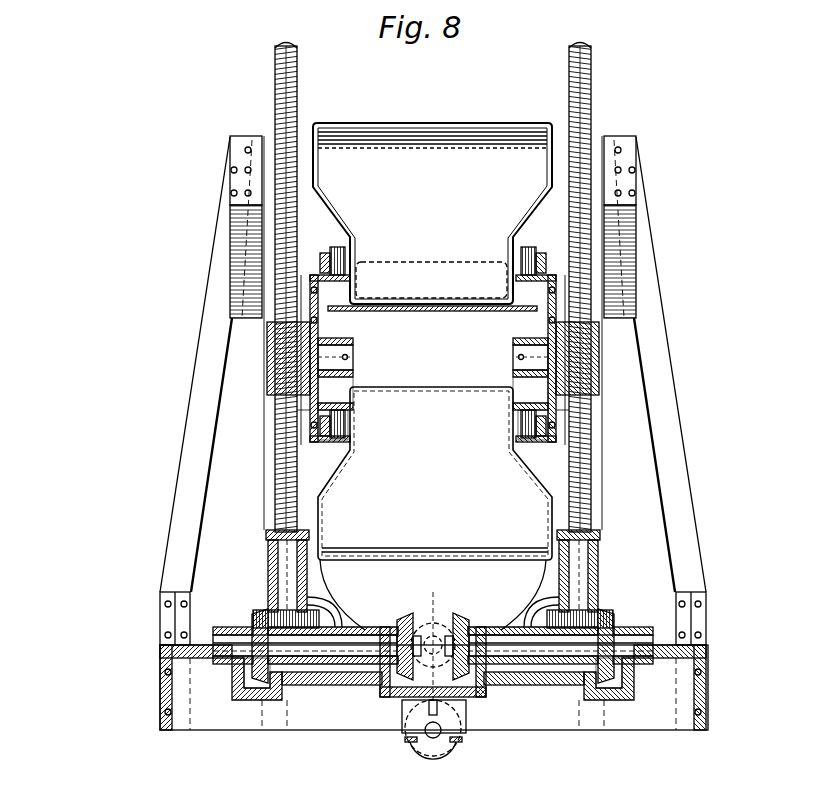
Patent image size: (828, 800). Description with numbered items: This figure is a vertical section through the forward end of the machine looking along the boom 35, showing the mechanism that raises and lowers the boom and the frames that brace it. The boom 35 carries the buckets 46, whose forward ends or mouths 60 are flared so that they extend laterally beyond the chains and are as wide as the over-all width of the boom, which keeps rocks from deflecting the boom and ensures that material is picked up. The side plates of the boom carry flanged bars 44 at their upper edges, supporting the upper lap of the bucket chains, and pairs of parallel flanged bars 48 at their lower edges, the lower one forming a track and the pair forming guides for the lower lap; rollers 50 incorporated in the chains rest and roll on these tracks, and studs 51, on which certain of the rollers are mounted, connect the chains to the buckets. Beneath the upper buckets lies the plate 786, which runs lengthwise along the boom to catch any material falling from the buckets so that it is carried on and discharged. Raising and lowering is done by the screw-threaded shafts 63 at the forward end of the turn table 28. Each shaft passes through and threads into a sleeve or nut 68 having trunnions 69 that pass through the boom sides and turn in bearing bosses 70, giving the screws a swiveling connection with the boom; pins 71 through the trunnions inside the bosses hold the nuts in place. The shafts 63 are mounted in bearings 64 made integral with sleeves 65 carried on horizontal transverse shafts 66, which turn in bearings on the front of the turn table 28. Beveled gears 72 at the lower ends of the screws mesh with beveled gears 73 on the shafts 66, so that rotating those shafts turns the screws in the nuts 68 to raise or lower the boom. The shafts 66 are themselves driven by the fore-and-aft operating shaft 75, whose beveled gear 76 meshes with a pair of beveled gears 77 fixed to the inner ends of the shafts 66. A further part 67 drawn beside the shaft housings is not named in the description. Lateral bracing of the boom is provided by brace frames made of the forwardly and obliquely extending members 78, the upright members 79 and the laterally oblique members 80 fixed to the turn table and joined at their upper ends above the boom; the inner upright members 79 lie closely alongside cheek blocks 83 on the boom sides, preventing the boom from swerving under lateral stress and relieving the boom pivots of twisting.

The turn table 28 is at (461, 661).
The screw-threaded raising and lowering shafts 63 is at (283, 62).
The forwardly and obliquely extending brace members 78 is at (245, 230).
The laterally oblique members 80 is at (182, 447).
The upright members 79 is at (214, 450).
The sleeves or nuts 68 is at (275, 356).
The bearing bosses 70 is at (340, 340).
The trunnions 69 is at (353, 360).
The pins 71 is at (346, 377).
The cheek blocks 83 is at (300, 412).
The rollers 50 is at (338, 250).
The studs 51 is at (325, 252).
The forward ends or mouths of the buckets 60 is at (440, 123).
The flanged bars 44 is at (348, 292).
The plate 786 is at (430, 306).
The buckets 46 is at (435, 406).
The flanged bars 48 is at (350, 418).
The bearings 64 is at (268, 560).
The beveled gears 72 is at (258, 616).
The sleeves 65 is at (345, 666).
The tube housing 67 is at (222, 632).
The horizontal transversely arranged shafts 66 is at (332, 655).
The beveled gears 73 is at (258, 672).
The beveled gears 77 is at (400, 662).
The horizontal operating shaft 75 is at (433, 622).
The beveled gear 76 is at (445, 628).
The boom 35 is at (434, 745).